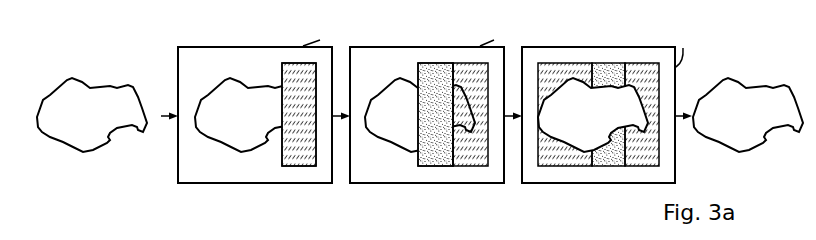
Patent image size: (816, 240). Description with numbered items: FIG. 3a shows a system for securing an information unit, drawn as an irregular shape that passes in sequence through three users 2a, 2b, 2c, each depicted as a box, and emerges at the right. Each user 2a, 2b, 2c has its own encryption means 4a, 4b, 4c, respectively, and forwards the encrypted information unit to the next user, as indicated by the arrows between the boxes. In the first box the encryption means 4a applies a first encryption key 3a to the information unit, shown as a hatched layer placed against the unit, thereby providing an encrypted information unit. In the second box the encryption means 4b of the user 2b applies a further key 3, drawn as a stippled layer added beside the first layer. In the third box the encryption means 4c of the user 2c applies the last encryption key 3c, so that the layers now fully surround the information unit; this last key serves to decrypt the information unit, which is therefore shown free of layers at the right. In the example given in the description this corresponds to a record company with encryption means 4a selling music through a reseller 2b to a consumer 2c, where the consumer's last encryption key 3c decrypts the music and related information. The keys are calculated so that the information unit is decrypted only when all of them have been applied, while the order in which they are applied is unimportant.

The first user 2a is at (255, 104).
The second user 2b is at (427, 104).
The third user 2c is at (598, 104).
The first encryption key 3a is at (293, 166).
The material layer 3 is at (430, 167).
The last encryption key 3c is at (552, 167).
The encrypting means 4a is at (320, 26).
The encrypting means 4b is at (495, 26).
The encrypting means 4c is at (684, 46).